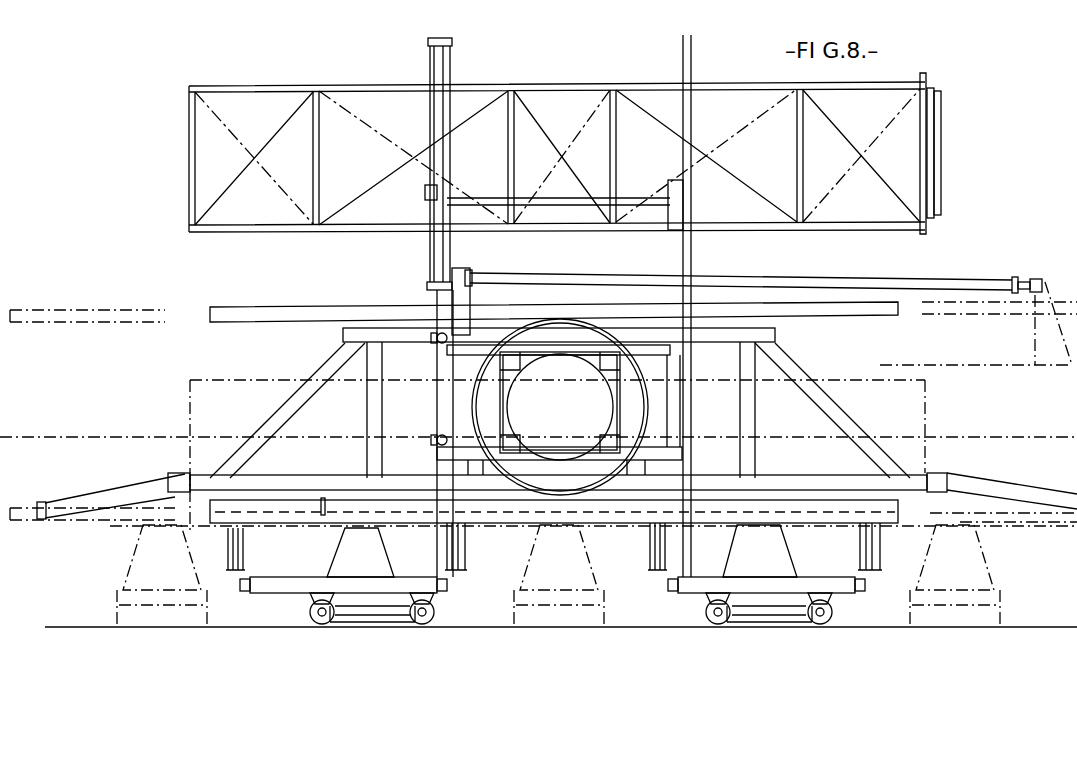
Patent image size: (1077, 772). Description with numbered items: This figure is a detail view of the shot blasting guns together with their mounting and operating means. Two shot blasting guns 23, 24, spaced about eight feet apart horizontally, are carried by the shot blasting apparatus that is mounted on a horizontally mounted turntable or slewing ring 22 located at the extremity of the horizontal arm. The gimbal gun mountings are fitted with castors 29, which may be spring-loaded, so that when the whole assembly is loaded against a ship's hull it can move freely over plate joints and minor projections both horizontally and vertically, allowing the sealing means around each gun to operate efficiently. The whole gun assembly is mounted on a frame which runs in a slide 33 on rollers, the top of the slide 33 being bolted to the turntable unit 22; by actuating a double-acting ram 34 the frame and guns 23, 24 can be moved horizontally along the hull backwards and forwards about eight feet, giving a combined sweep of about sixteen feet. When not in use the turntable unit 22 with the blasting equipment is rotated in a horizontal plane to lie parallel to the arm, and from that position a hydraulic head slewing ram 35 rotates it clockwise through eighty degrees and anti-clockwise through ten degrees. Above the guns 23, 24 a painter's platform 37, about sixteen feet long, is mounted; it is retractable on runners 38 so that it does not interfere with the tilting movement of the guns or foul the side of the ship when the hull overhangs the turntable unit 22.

The painter's platform 37 is at (569, 122).
The runners 38 is at (432, 252).
The turntable or slewing ring 22 is at (567, 327).
The head slewing ram 35 is at (892, 285).
The slide 33 is at (880, 508).
The double-acting ram 34 is at (522, 507).
The shot blasting gun 23 is at (375, 564).
The shot blasting gun 24 is at (775, 564).
The castors 29 is at (420, 619).